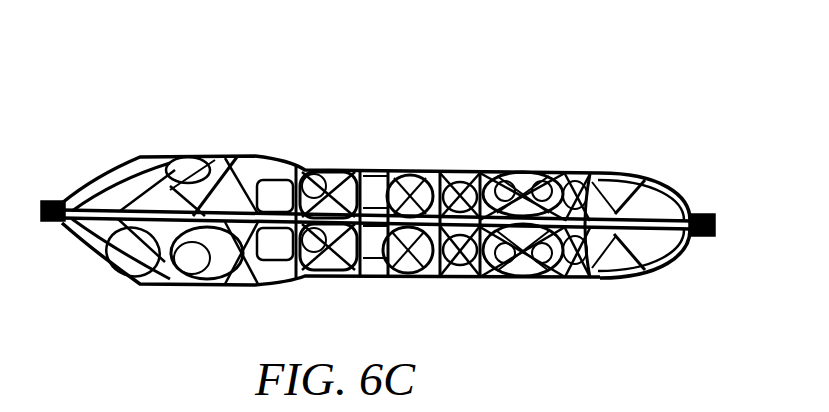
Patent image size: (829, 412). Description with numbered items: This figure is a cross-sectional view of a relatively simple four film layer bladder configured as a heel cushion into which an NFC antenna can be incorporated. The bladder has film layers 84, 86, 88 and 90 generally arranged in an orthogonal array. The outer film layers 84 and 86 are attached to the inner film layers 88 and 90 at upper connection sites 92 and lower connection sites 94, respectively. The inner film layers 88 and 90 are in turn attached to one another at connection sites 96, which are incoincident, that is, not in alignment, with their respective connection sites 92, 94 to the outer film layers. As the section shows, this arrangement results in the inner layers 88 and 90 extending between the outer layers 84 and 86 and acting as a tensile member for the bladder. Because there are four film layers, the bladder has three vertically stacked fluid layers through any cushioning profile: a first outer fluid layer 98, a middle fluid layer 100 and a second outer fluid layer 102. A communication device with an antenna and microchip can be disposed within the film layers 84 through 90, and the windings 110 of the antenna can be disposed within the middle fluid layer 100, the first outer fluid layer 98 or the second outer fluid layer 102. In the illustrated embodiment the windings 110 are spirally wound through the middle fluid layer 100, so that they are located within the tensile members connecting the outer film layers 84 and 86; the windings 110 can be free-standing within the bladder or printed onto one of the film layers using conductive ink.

The outer film layer 84 is at (663, 173).
The outer film layer 86 is at (640, 281).
The inner film layer 88 is at (410, 173).
The inner film layer 90 is at (305, 270).
The upper connection sites 92 is at (571, 173).
The lower connection sites 94 is at (472, 270).
The connection sites 96 is at (312, 166).
The first outer fluid layer 98 is at (103, 170).
The middle fluid layer 100 is at (160, 272).
The second outer fluid layer 102 is at (95, 264).
The windings 110 is at (487, 172).